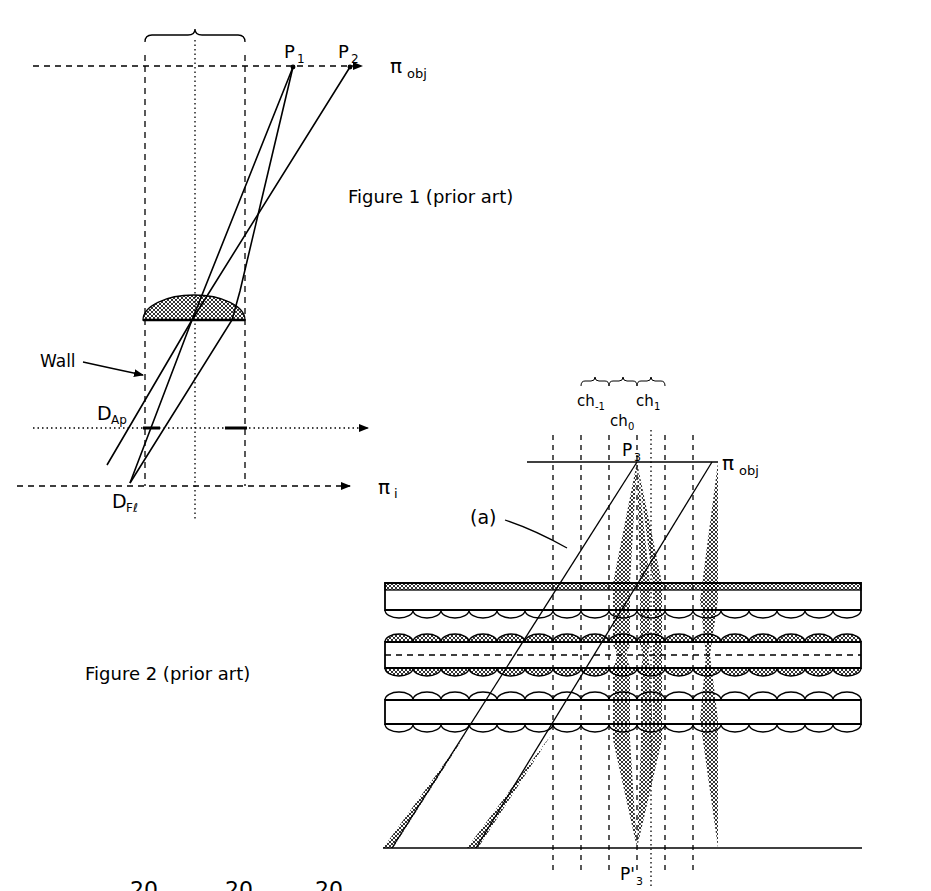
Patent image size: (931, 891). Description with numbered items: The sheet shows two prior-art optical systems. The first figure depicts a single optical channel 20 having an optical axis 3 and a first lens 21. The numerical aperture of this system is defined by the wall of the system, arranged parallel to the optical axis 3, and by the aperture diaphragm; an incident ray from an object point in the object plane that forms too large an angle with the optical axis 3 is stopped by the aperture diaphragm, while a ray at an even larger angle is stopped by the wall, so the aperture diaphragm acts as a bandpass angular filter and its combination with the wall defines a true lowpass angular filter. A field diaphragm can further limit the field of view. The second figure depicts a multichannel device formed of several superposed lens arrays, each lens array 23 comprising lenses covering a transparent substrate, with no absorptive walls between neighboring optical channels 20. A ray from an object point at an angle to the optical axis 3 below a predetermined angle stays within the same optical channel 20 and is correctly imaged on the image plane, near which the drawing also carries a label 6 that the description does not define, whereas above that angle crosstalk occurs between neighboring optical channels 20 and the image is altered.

In FIG. 1, the optical channel 20 is at (195, 246).
In FIG. 2, the optical channel 20 is at (623, 610).
In FIG. 1, the optical axis 3 is at (193, 111).
In FIG. 1, the first lens 21 is at (167, 307).
In FIG. 2, the lens array 23 is at (377, 601).
In FIG. 2, the image plane 6 is at (655, 828).